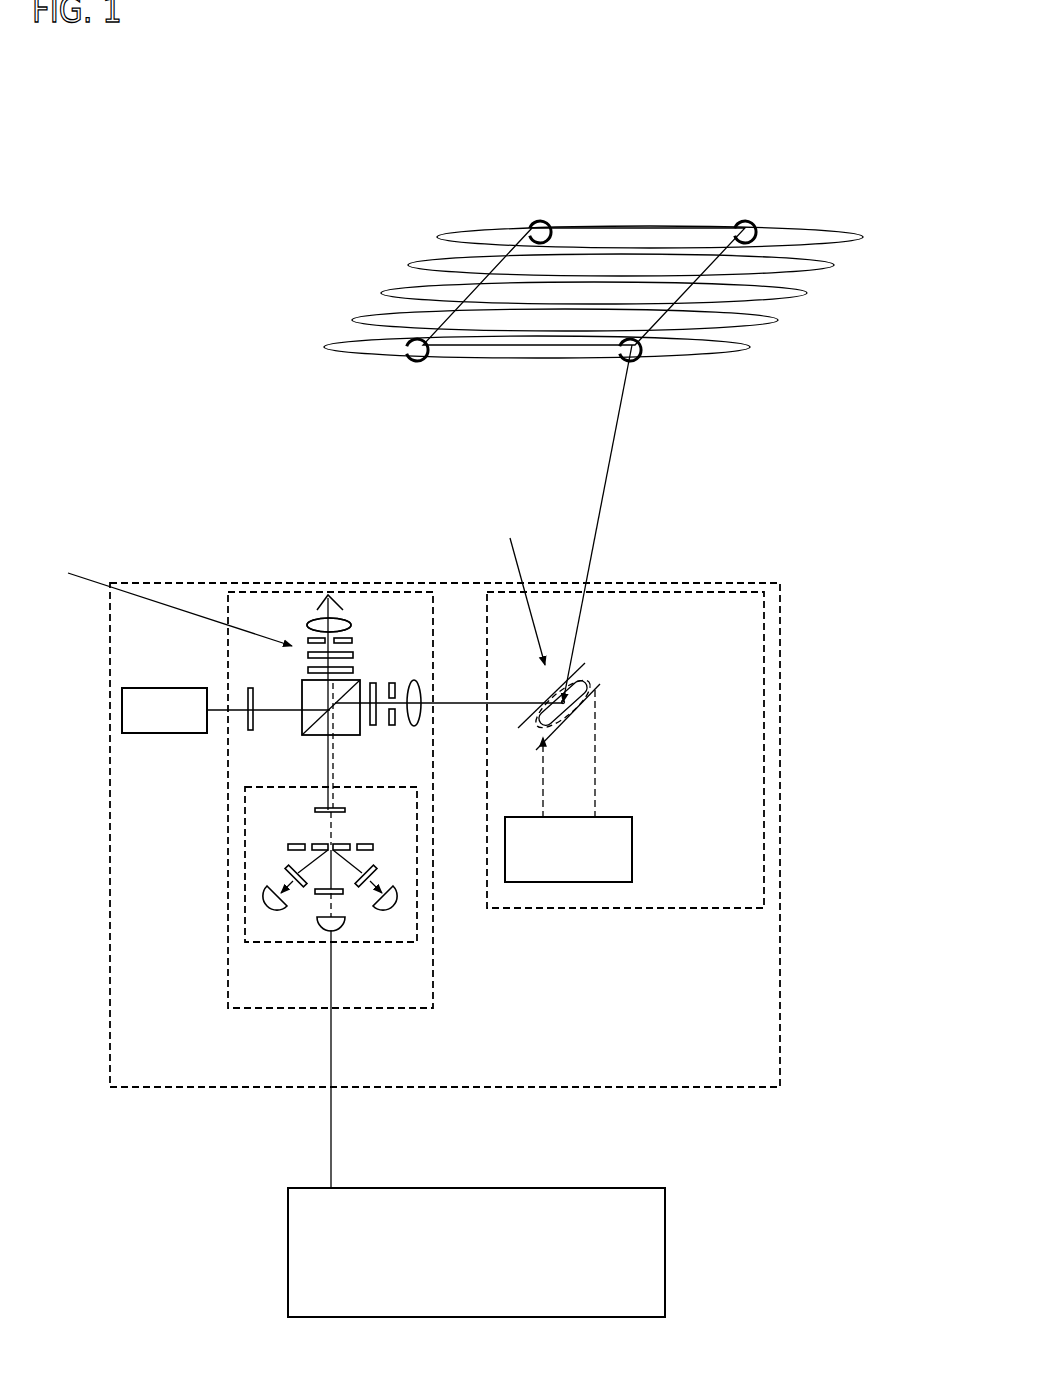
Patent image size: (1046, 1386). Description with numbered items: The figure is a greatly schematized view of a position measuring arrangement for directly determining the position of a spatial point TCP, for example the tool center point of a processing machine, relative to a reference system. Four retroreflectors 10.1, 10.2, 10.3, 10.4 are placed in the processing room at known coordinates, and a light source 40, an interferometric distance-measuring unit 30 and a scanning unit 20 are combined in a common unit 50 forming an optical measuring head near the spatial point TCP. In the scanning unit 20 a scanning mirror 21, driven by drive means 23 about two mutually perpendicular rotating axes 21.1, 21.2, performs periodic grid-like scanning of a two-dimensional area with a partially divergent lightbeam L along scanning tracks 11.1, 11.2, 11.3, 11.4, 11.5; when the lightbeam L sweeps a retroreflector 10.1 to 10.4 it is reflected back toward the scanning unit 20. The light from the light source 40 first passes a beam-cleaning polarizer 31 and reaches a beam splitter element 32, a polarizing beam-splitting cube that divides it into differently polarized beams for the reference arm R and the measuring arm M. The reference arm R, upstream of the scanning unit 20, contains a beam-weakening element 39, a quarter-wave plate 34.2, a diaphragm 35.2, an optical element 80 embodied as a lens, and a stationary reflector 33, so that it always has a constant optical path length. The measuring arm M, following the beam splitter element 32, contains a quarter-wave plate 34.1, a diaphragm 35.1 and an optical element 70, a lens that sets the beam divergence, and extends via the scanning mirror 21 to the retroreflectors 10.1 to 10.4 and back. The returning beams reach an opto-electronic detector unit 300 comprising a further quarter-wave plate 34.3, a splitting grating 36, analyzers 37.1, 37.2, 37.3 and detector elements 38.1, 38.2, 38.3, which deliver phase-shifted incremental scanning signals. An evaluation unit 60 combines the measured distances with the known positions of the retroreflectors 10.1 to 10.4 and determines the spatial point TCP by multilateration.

The retroreflector 10.1 is at (430, 345).
The retroreflector 10.2 is at (540, 213).
The retroreflector 10.3 is at (748, 213).
The retroreflector 10.4 is at (645, 350).
The scanning track 11.1 is at (380, 358).
The scanning track 11.2 is at (383, 312).
The scanning track 11.3 is at (785, 298).
The scanning track 11.4 is at (808, 272).
The scanning track 11.5 is at (818, 226).
The lightbeam L is at (603, 483).
The measuring arm M is at (524, 584).
The scanning unit 20 is at (764, 895).
The scanning mirror 21 is at (600, 683).
The rotating axis 21.1 is at (600, 688).
The rotating axis 21.2 is at (585, 665).
The spatial point TCP is at (565, 702).
The drive means 23 is at (610, 847).
The interferometric distance-measuring unit 30 is at (228, 993).
The opto-electronic detector unit 300 is at (303, 943).
The polarizer 31 is at (248, 728).
The beam splitter element 32 is at (350, 728).
The reflector 33 is at (322, 616).
The λ/4 plate 34.1 is at (373, 682).
The λ/4 plate 34.2 is at (307, 668).
The λ/4 plate 34.3 is at (323, 808).
The diaphragm 35.1 is at (391, 682).
The diaphragm 35.2 is at (307, 640).
The splitting grating 36 is at (287, 847).
The analyzer 37.1 is at (287, 868).
The analyzer 37.2 is at (340, 893).
The analyzer 37.3 is at (383, 868).
The detector element 38.1 is at (277, 872).
The detector element 38.2 is at (338, 922).
The detector element 38.3 is at (375, 870).
The beam-weakening element 39 is at (307, 655).
The light source 40 is at (130, 712).
The common unit 50 is at (780, 1040).
The evaluation unit 60 is at (643, 1250).
The optical element 70 is at (415, 680).
The optical element 80 is at (309, 628).
The reference arm R is at (169, 599).